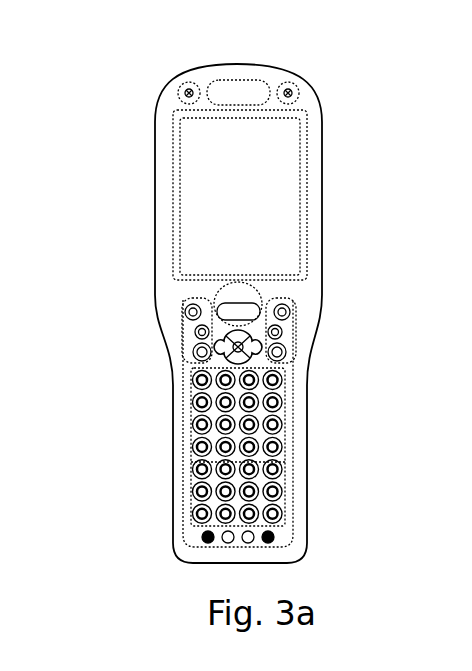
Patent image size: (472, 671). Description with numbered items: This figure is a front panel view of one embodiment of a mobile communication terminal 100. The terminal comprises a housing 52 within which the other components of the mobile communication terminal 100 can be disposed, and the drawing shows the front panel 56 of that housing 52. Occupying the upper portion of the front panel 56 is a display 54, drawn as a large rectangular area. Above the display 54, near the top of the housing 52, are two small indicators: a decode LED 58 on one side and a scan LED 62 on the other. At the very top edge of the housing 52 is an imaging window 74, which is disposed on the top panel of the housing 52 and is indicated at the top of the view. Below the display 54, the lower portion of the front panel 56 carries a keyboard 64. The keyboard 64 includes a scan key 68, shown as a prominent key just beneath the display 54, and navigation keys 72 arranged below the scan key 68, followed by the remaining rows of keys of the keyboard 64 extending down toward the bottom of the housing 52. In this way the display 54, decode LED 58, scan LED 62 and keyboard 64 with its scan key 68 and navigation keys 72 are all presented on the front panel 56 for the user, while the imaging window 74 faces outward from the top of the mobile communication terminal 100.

The mobile communication terminal 100 is at (152, 58).
The housing 52 is at (323, 178).
The display 54 is at (225, 197).
The front panel 56 is at (162, 140).
The decode LED 58 is at (183, 90).
The scan LED 62 is at (298, 89).
The keyboard 64 is at (210, 418).
The scan key 68 is at (215, 300).
The navigation keys 72 is at (218, 348).
The imaging window 74 is at (236, 64).